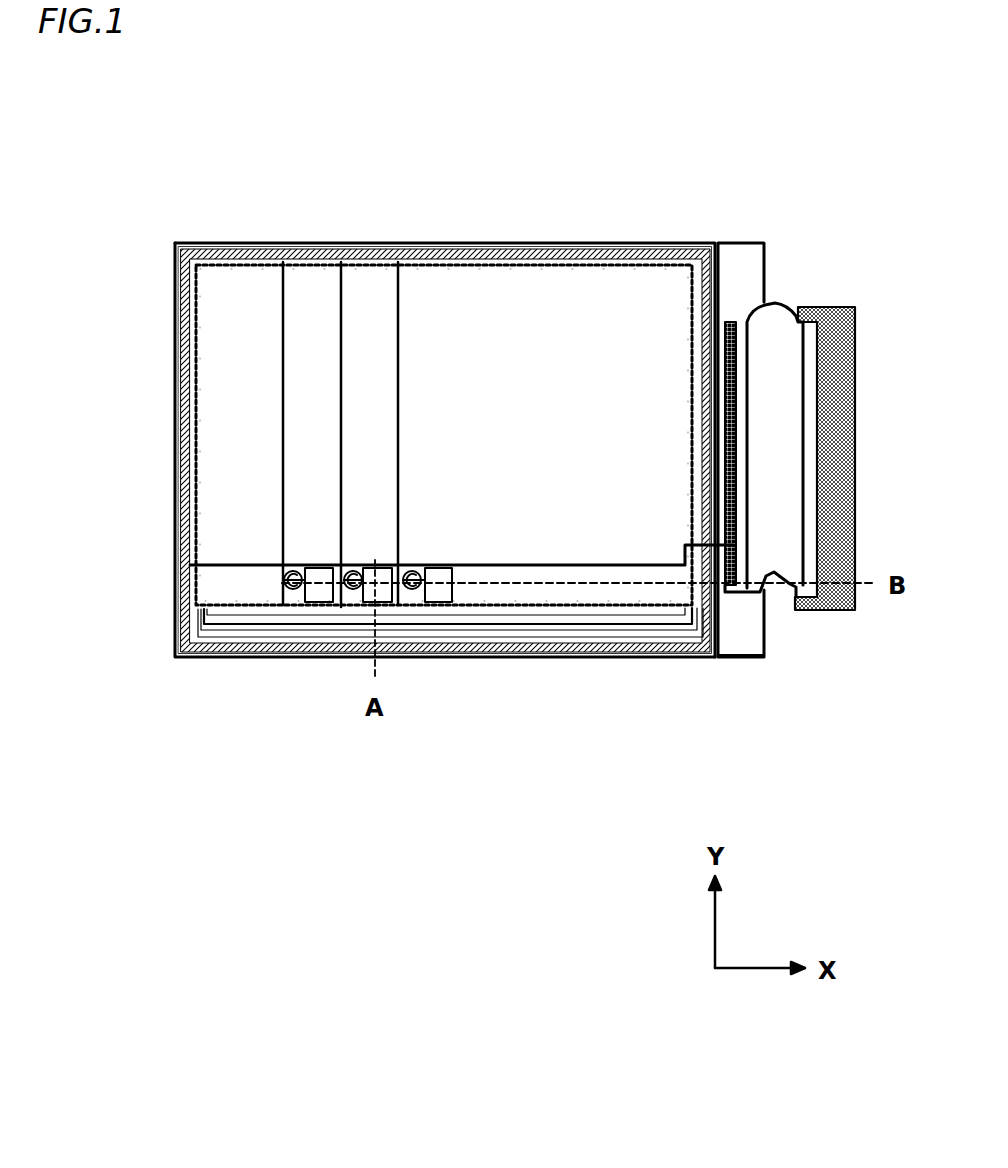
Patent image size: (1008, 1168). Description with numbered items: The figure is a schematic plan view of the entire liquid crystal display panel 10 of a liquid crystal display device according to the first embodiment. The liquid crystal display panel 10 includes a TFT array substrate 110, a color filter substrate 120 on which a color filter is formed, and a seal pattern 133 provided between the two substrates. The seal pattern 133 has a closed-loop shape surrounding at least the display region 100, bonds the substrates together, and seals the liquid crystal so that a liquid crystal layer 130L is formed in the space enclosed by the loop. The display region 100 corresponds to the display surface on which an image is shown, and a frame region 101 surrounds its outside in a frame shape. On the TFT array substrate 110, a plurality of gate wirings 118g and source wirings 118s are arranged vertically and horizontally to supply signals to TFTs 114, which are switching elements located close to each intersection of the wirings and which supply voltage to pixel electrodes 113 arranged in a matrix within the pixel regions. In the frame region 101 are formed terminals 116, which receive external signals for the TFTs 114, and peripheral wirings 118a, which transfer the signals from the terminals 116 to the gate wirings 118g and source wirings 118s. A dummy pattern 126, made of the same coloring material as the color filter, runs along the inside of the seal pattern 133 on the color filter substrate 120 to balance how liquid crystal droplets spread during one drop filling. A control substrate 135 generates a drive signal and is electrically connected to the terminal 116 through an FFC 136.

The liquid crystal display panel 10 is at (578, 170).
The display region 100 is at (200, 403).
The frame region 101 is at (173, 650).
The seal pattern 133 is at (238, 248).
The liquid crystal layer 130L is at (458, 293).
The gate wirings 118g is at (282, 323).
The source wirings 118s is at (222, 562).
The TFTs 114 is at (282, 558).
The pixel electrodes 113 is at (370, 606).
The dummy pattern 126 is at (538, 633).
The TFT array substrate 110 is at (770, 620).
The color filter substrate 120 is at (715, 643).
The terminals 116 is at (728, 322).
The FFC (Flexible Flat cable) 136 is at (780, 338).
The control substrate 135 is at (832, 325).
The peripheral wirings 118a is at (603, 613).